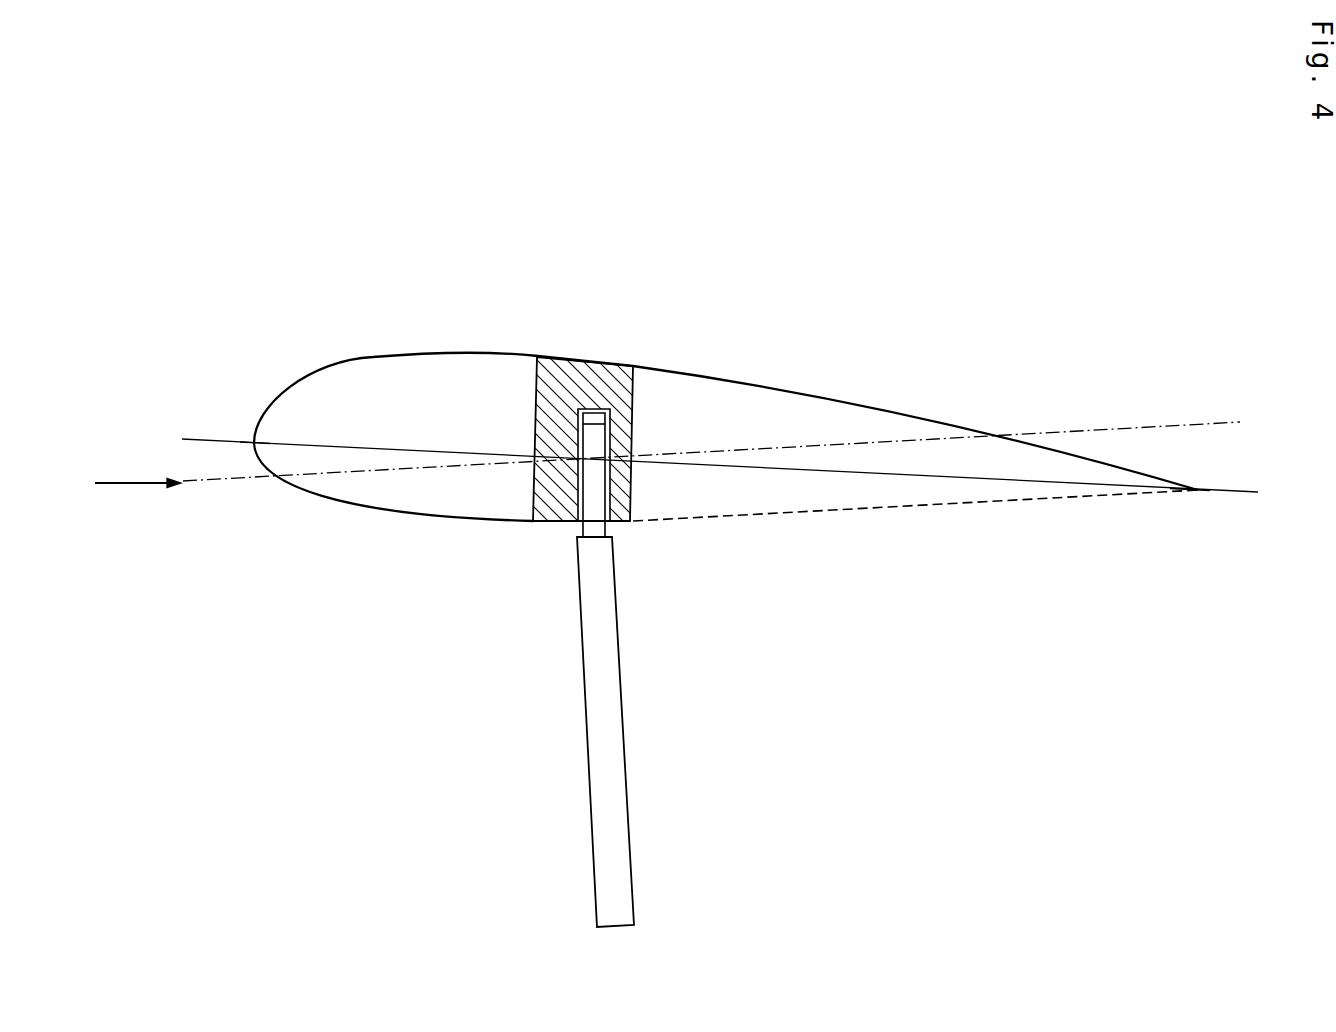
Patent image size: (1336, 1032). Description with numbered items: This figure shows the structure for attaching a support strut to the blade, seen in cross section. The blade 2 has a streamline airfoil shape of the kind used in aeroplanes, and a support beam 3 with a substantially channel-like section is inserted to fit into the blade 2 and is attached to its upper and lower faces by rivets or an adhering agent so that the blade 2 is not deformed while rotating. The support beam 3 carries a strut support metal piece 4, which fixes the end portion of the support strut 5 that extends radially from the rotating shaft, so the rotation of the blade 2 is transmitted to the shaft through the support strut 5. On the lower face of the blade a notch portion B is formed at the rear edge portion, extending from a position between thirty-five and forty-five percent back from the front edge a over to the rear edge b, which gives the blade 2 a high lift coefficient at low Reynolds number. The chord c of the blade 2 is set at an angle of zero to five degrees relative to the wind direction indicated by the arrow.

The blade 2 is at (325, 370).
The support beam 3 is at (535, 395).
The strut support metal piece 4 is at (620, 366).
The support strut 5 is at (610, 687).
The front edge a is at (250, 428).
The rear edge b is at (1196, 506).
The chord c is at (383, 447).
The notch portion B is at (742, 512).